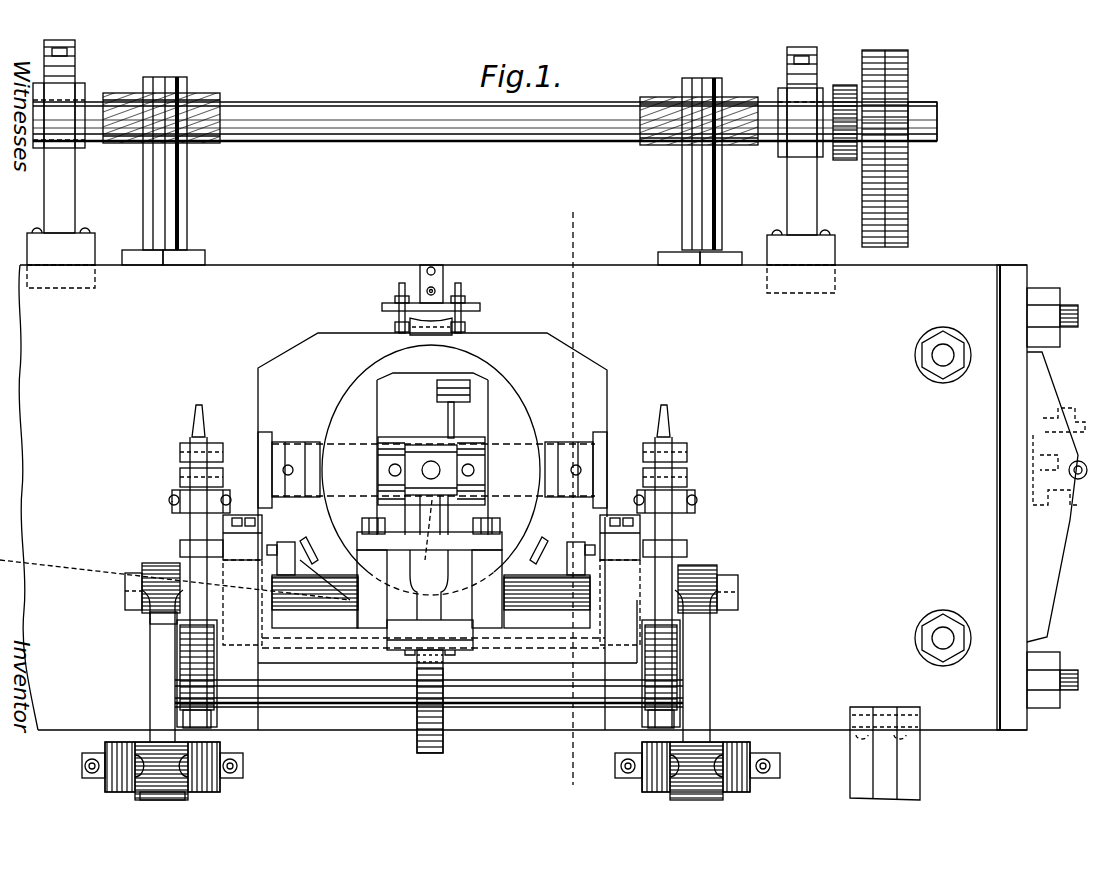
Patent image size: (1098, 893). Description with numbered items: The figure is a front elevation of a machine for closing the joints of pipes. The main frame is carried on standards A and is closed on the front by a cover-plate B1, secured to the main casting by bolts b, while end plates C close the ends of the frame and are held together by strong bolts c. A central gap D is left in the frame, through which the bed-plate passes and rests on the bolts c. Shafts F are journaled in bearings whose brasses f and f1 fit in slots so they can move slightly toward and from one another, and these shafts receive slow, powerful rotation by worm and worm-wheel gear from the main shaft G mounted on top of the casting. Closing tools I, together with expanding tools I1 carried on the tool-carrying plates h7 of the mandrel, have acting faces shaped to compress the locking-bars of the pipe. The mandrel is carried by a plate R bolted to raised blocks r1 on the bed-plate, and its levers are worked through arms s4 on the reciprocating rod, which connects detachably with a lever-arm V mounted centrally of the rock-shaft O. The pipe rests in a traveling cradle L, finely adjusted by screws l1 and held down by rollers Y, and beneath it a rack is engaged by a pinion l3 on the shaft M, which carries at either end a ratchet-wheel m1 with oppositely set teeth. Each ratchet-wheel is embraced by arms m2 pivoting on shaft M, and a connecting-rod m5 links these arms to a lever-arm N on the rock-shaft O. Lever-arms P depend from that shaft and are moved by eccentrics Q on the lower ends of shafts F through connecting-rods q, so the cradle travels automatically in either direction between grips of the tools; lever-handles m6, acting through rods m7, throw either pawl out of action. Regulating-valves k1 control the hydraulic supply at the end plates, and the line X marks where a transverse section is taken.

The shaft F is at (160, 86).
The main shaft G is at (485, 121).
The bearing-brass f is at (145, 252).
The bearing-brass f1 is at (190, 252).
The cover-plate B1 is at (523, 497).
The end plate C is at (1012, 284).
The bolt c is at (1068, 312).
The bolt b is at (941, 360).
The regulating-valve k1 is at (1060, 410).
The standard A is at (906, 776).
The section line X is at (574, 499).
The gap D is at (447, 531).
The roller Y is at (405, 329).
The closing tool I is at (268, 445).
The tool I1 is at (598, 445).
The tool-carrying plate h7 is at (302, 445).
The lever-arm V is at (430, 450).
The arm s4 is at (452, 400).
The plate R is at (497, 542).
The raised block r1 is at (429, 589).
The traveling cradle L is at (520, 590).
The screw l1 is at (300, 543).
The pinion l3 is at (416, 742).
The shaft M is at (520, 694).
The ratchet-wheel m1 is at (212, 720).
The arm m2 is at (210, 646).
The connecting-rod m5 is at (180, 508).
The lever-handle m6 is at (428, 412).
The rod m7 is at (210, 446).
The lever-arm N is at (196, 530).
The rock-shaft O is at (128, 596).
The lever-arm P is at (162, 698).
The eccentric Q is at (105, 745).
The connecting-rod q is at (186, 794).